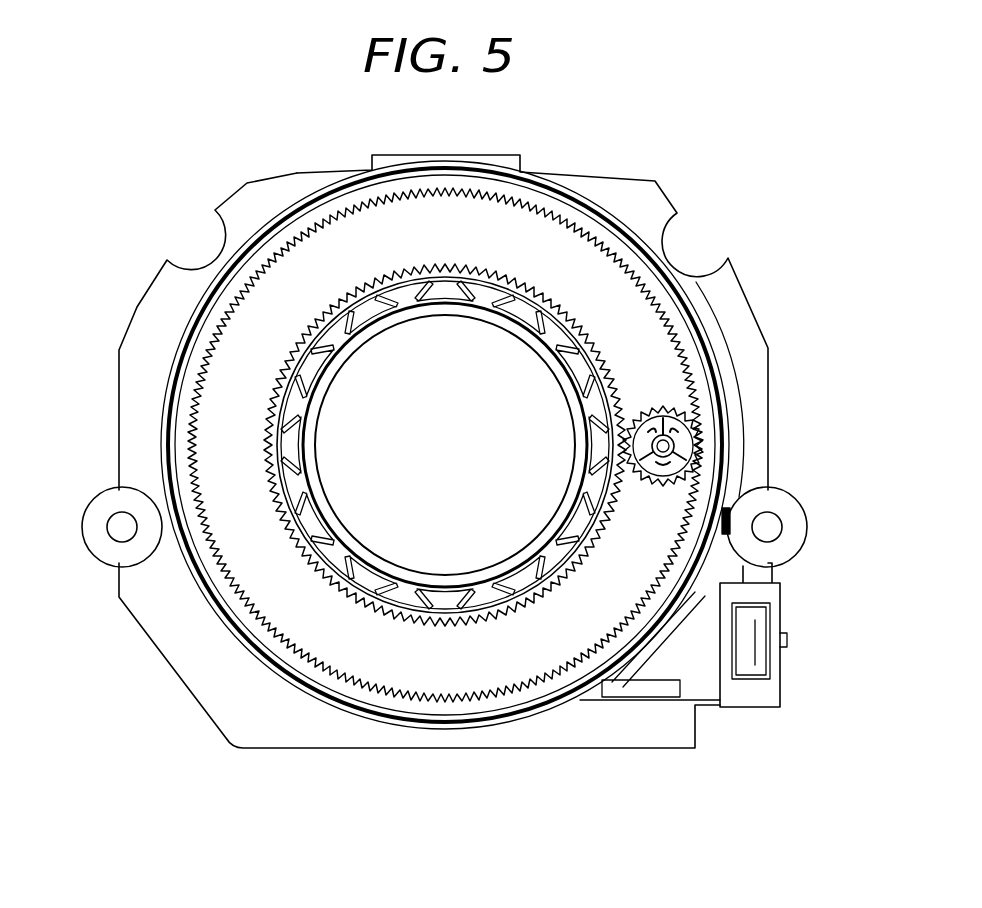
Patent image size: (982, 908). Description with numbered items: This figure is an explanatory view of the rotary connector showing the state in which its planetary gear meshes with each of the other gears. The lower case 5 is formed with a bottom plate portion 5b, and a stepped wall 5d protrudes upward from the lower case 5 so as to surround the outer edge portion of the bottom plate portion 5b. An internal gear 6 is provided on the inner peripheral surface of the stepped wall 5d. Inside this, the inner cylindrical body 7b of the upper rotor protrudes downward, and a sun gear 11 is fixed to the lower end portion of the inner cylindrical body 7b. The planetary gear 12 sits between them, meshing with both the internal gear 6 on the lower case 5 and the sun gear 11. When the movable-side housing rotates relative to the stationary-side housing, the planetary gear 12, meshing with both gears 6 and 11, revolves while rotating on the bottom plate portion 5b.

The lower case 5 is at (655, 181).
The bottom plate portion 5b is at (516, 658).
The stepped wall 5d is at (175, 403).
The internal gear 6 is at (671, 352).
The inner cylindrical body 7b is at (300, 545).
The sun gear 11 is at (412, 625).
The planetary gear 12 is at (680, 483).